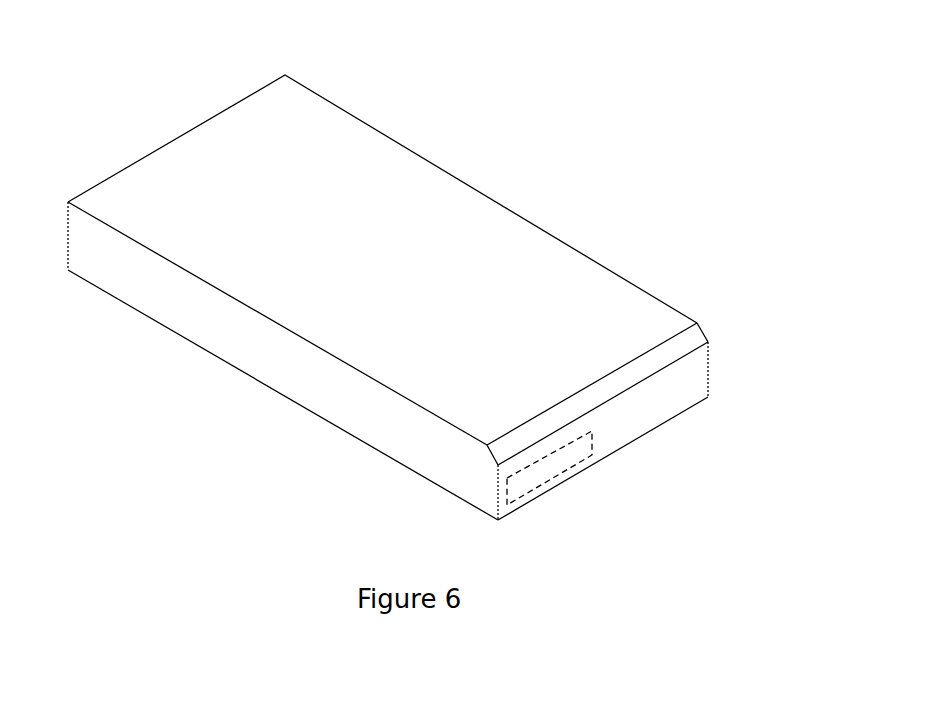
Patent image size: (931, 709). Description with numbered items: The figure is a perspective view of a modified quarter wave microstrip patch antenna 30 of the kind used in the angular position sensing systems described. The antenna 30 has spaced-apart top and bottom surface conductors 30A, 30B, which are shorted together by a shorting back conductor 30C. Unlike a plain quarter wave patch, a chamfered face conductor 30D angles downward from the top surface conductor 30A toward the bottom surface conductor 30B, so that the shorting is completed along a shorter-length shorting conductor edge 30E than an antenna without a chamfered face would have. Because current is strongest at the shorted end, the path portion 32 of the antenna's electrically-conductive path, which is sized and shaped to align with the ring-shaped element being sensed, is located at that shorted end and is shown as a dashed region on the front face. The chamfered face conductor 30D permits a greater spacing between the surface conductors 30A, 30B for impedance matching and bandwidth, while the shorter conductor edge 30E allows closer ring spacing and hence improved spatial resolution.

The modified quarter wave microstrip patch antenna 30 is at (141, 96).
The top surface conductor 30A is at (537, 257).
The bottom surface conductor 30B is at (650, 432).
The shorting back conductor 30C is at (242, 355).
The chamfered face conductor 30D is at (707, 330).
The shorting conductor edge 30E is at (497, 497).
The path portion 32 is at (547, 485).